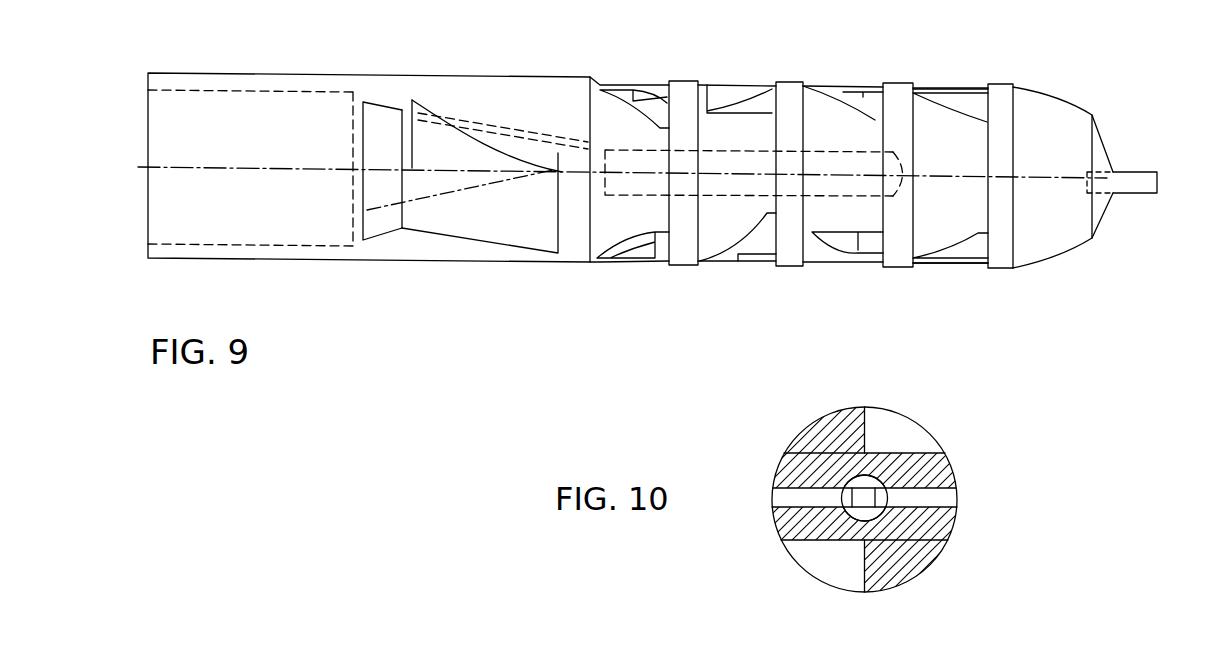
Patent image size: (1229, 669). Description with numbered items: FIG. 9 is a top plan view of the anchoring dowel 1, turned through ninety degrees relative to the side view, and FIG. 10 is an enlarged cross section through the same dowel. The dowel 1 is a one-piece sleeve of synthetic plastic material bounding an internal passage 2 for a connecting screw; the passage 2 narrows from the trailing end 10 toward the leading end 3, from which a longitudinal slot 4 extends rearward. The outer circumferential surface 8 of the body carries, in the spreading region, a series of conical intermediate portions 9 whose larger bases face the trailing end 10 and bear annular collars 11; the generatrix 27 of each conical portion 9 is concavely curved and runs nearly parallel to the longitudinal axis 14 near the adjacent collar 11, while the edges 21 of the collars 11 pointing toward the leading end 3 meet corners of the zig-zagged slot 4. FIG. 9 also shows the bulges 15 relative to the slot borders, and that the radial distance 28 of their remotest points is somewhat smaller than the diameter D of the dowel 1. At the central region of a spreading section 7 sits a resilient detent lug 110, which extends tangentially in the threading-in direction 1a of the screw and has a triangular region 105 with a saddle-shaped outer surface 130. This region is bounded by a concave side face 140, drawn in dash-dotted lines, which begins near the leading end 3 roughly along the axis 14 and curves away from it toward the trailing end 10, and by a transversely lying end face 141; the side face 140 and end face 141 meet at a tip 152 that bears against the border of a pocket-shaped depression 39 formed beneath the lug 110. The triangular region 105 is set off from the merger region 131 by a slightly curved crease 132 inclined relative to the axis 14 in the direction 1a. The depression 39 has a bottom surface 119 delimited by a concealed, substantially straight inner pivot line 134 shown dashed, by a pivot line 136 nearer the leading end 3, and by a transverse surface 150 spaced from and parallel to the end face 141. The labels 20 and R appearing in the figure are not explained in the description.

In FIG. 9, the anchoring dowel 1 is at (776, 66).
In FIG. 10, the anchoring dowel 1 is at (763, 493).
In FIG. 9, the threading-in direction 1a is at (183, 192).
In FIG. 9, the internal passage 2 is at (208, 232).
In FIG. 10, the internal passage 2 is at (857, 478).
In FIG. 9, the leading end 3 is at (1130, 288).
In FIG. 10, the longitudinal slot 4 is at (937, 498).
In FIG. 9, the spreading section 7 is at (818, 117).
In FIG. 9, the outer circumferential surface 8 is at (637, 220).
In FIG. 9, the conical intermediate portions 9 is at (735, 264).
In FIG. 9, the trailing end 10 is at (153, 275).
In FIG. 9, the annular collars 11 is at (680, 266).
In FIG. 9, the longitudinal axis 14 is at (1030, 178).
In FIG. 9, the bulges 15 is at (753, 106).
In FIG. 9, the insert cartridge 20 is at (456, 165).
In FIG. 9, the edges of the annular collars 21 is at (699, 219).
In FIG. 9, the generatrix 27 is at (950, 112).
In FIG. 9, the radial distance 28 is at (875, 253).
In FIG. 10, the pocket-shaped depression 39 is at (872, 447).
In FIG. 9, the triangular region 105 is at (412, 185).
In FIG. 9, the detent lug 110 is at (467, 248).
In FIG. 10, the bottom surface 119 is at (922, 452).
In FIG. 9, the outer surface 130 is at (428, 130).
In FIG. 9, the merger region 131 is at (475, 127).
In FIG. 9, the crease 132 is at (513, 155).
In FIG. 9, the inner pivot line 134 is at (510, 130).
In FIG. 10, the inner pivot line 134 is at (853, 452).
In FIG. 9, the pivot line 136 is at (588, 140).
In FIG. 9, the side face 140 is at (408, 117).
In FIG. 10, the side face 140 is at (870, 420).
In FIG. 9, the end face 141 is at (367, 210).
In FIG. 9, the transverse surfaces 150 is at (408, 212).
In FIG. 9, the tip 152 is at (395, 242).
In FIG. 9, the radius R is at (978, 114).
In FIG. 9, the diameter D is at (1073, 88).